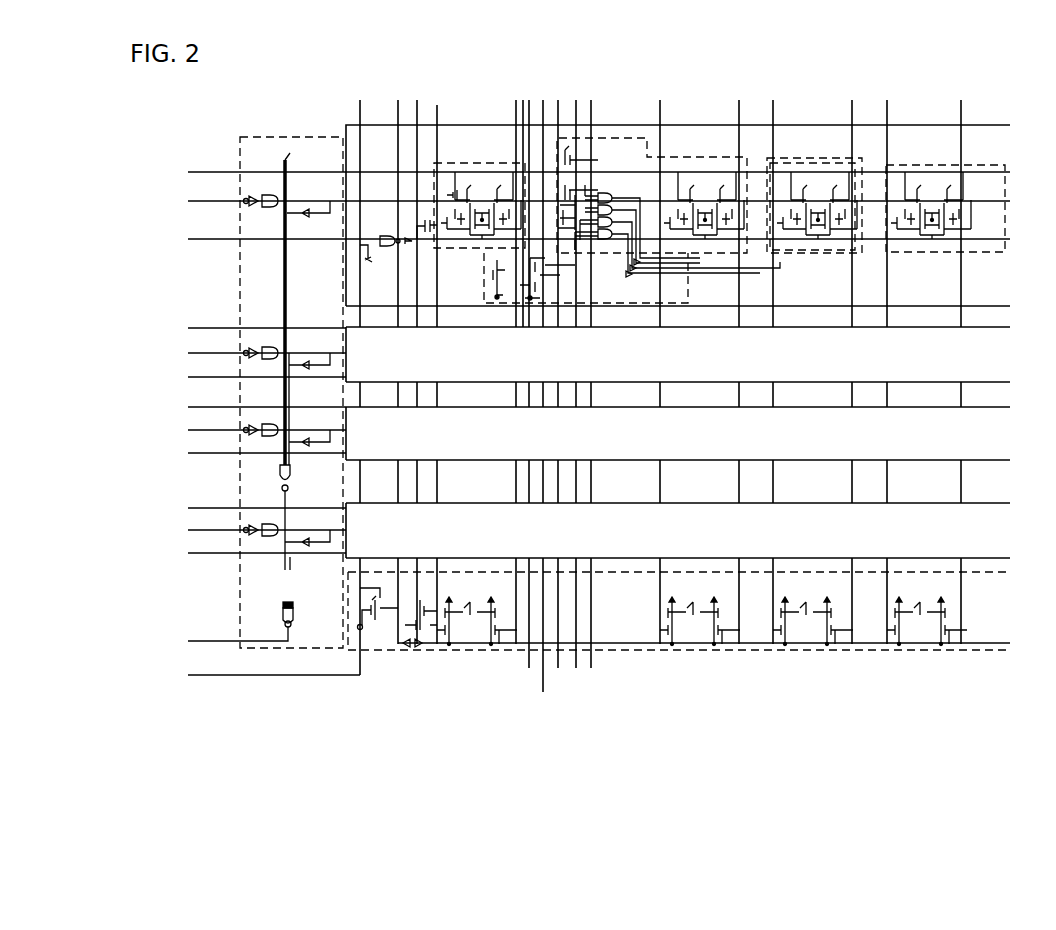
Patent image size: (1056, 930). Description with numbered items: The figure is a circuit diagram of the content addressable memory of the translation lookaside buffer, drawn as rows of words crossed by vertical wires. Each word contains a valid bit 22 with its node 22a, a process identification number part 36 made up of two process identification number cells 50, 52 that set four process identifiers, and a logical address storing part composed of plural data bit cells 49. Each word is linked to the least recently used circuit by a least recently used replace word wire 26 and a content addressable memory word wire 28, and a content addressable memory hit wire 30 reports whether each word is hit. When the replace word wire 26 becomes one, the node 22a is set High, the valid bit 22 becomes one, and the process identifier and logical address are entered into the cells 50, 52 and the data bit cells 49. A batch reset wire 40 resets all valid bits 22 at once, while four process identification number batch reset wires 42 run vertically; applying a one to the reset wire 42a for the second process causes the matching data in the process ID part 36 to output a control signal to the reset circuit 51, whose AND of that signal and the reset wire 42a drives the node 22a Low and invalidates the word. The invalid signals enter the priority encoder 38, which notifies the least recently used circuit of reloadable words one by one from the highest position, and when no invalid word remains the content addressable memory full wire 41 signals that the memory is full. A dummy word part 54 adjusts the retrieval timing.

The valid bit 22 is at (446, 160).
The node 22a is at (460, 198).
The least recently used replace word wire 26 is at (188, 172).
The content addressable memory word wire 28 is at (188, 239).
The content addressable memory hit wire 30 is at (188, 675).
The process identification number part 36 is at (826, 162).
The priority encoder 38 is at (247, 137).
The batch reset wire 40 is at (188, 201).
The content addressable memory full wire 41 is at (188, 641).
The process identification number batch reset wires 42 is at (596, 670).
The reset wire 42a is at (533, 407).
The data bit cells 49 is at (940, 166).
The process identification number cell ID1 50 is at (655, 160).
The reset circuit 51 is at (690, 300).
The process identification number cell ID2 52 is at (774, 163).
The dummy word part 54 is at (790, 652).